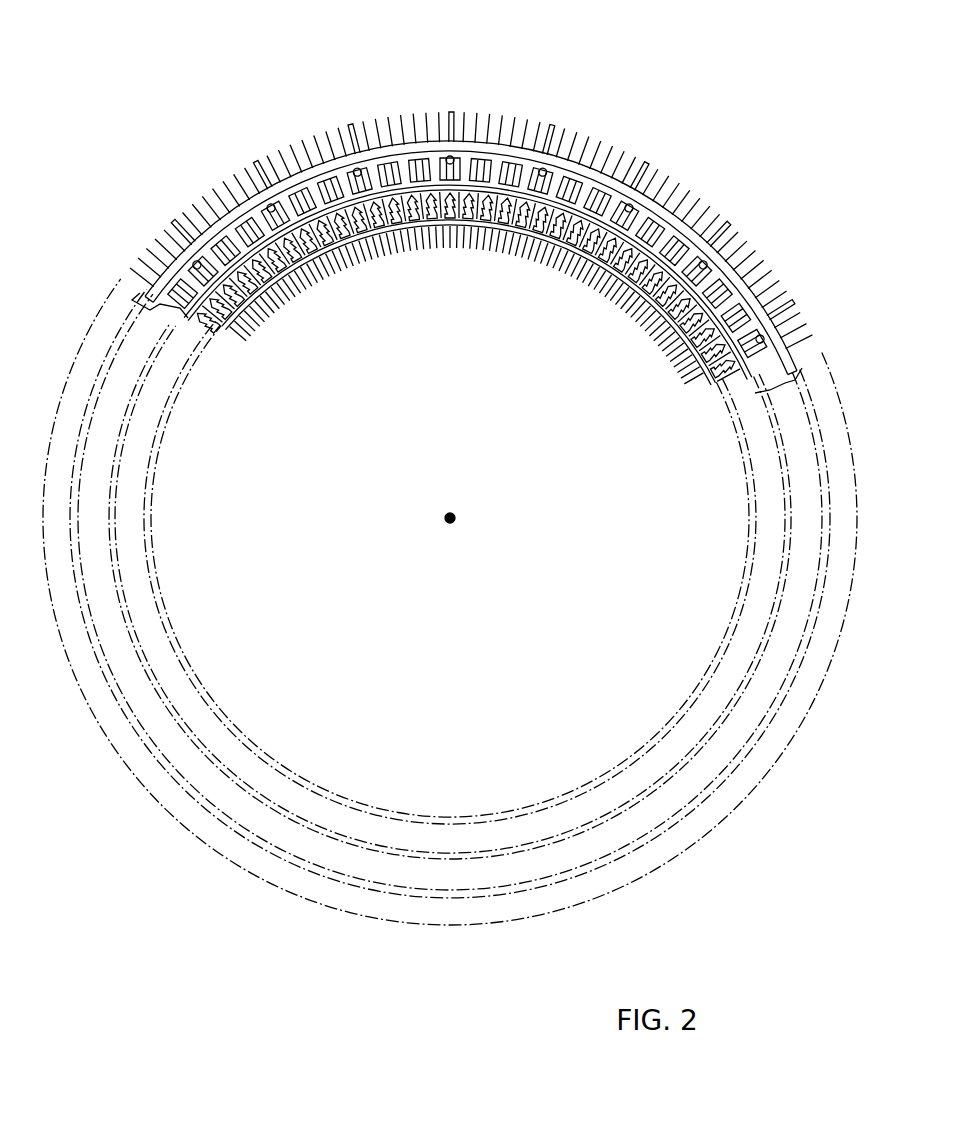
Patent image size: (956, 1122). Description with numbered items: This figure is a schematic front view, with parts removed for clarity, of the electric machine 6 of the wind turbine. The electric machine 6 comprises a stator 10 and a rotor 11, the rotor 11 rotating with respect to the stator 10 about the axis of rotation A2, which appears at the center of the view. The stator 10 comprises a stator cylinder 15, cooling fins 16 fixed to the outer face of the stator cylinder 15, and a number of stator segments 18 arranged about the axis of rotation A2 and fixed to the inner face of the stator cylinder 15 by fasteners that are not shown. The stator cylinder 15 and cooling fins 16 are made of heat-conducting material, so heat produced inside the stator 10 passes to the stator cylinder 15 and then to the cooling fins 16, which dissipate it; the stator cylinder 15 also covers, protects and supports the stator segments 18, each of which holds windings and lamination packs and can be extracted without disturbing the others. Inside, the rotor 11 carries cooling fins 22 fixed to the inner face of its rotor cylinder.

The electric machine 6 is at (217, 885).
The stator 10 is at (641, 123).
The rotor 11 is at (470, 274).
The stator cylinder 15 is at (428, 137).
The cooling fins 16 is at (266, 141).
The stator segments 18 is at (232, 232).
The cooling fins 22 is at (266, 327).
The axis of rotation A2 is at (456, 515).